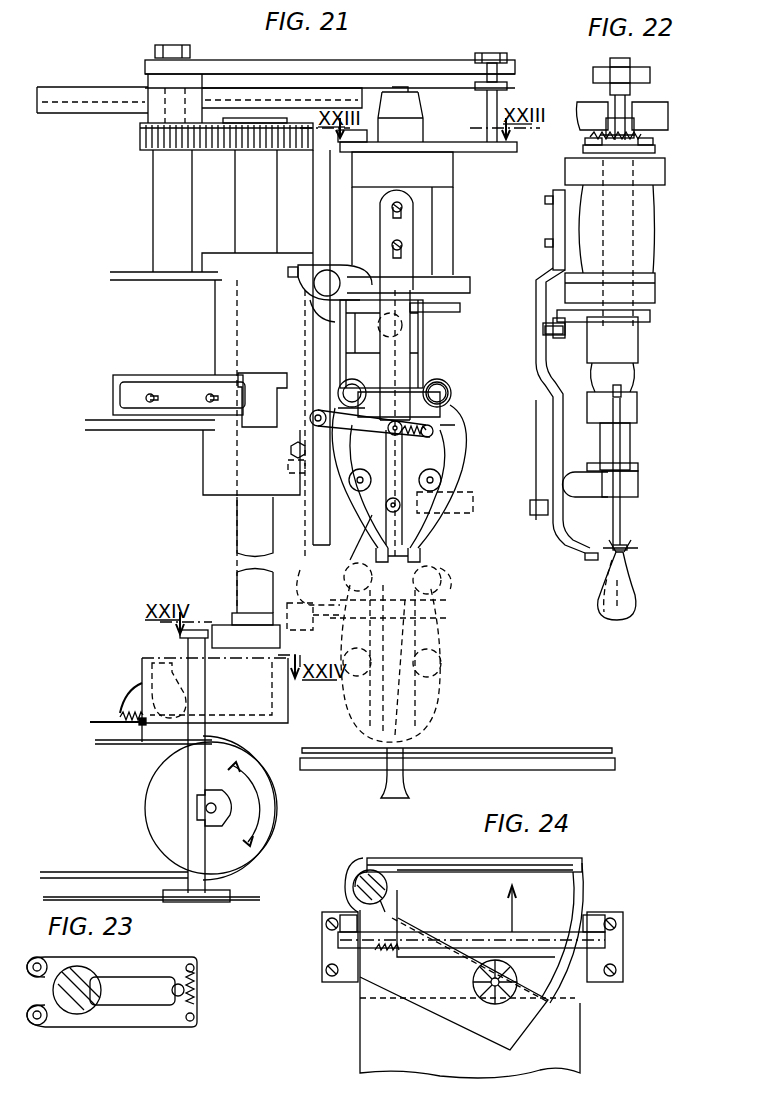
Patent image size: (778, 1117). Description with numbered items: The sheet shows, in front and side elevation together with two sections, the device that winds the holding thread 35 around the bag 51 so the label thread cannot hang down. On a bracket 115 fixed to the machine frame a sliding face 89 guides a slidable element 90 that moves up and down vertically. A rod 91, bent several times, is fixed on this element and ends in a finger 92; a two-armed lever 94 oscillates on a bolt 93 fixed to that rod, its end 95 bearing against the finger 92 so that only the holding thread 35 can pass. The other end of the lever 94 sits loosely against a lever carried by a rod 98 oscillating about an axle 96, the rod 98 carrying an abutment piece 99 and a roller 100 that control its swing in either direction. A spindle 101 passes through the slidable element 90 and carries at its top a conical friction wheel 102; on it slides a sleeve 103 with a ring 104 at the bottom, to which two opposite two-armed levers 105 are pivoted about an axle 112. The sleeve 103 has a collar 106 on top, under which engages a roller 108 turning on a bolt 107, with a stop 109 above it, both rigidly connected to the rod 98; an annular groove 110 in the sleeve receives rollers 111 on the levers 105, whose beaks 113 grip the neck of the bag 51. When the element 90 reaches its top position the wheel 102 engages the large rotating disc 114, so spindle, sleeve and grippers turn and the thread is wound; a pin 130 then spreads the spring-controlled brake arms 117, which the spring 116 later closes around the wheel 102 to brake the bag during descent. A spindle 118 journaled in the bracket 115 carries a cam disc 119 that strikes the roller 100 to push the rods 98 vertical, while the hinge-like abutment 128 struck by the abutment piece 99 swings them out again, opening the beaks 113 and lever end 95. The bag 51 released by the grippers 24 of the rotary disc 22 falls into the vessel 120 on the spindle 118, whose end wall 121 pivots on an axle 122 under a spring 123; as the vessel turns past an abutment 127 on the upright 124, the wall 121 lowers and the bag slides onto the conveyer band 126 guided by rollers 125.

In FIG. 21, the rotary disc 22 is at (606, 748).
In FIG. 21, the grippers 24 is at (460, 758).
In FIG. 21, the holding thread 35 is at (445, 592).
In FIG. 21, the bag 51 is at (138, 684).
In FIG. 22, the bag 51 is at (630, 598).
In FIG. 24, the bag 51 is at (497, 1003).
In FIG. 21, the sliding face 89 is at (318, 208).
In FIG. 21, the slidable element 90 is at (415, 235).
In FIG. 22, the slidable element 90 is at (642, 238).
In FIG. 21, the rod 91 is at (395, 425).
In FIG. 22, the rod 91 is at (543, 263).
In FIG. 21, the finger 92 is at (372, 600).
In FIG. 22, the finger 92 is at (590, 562).
In FIG. 21, the bolt 93 is at (452, 506).
In FIG. 22, the bolt 93 is at (548, 510).
In FIG. 21, the two-armed lever 94 is at (452, 462).
In FIG. 22, the two-armed lever 94 is at (546, 483).
In FIG. 21, the end of two-armed lever 95 is at (422, 548).
In FIG. 21, the axle 96 is at (320, 290).
In FIG. 21, the rod 98 is at (313, 352).
In FIG. 21, the abutment piece 99 is at (288, 272).
In FIG. 21, the roller 100 is at (292, 450).
In FIG. 21, the spindle 101 is at (435, 432).
In FIG. 22, the spindle 101 is at (628, 453).
In FIG. 21, the conical friction wheel 102 is at (405, 110).
In FIG. 22, the conical friction wheel 102 is at (632, 128).
In FIG. 23, the conical friction wheel 102 is at (77, 1002).
In FIG. 21, the sleeve 103 is at (410, 340).
In FIG. 22, the sleeve 103 is at (612, 354).
In FIG. 21, the ring 104 is at (352, 537).
In FIG. 22, the ring 104 is at (577, 475).
In FIG. 21, the two-armed levers 105 is at (452, 417).
In FIG. 22, the two-armed levers 105 is at (621, 520).
In FIG. 21, the collar 106 is at (460, 308).
In FIG. 22, the collar 106 is at (642, 315).
In FIG. 22, the bolt 107 is at (566, 329).
In FIG. 21, the roller 108 is at (382, 322).
In FIG. 22, the roller 108 is at (568, 341).
In FIG. 21, the stop 109 is at (412, 293).
In FIG. 22, the stop 109 is at (610, 288).
In FIG. 21, the annular groove 110 is at (440, 386).
In FIG. 22, the annular groove 110 is at (628, 386).
In FIG. 21, the rollers 111 is at (450, 393).
In FIG. 22, the rollers 111 is at (632, 410).
In FIG. 21, the axle 112 is at (441, 480).
In FIG. 22, the axle 112 is at (624, 488).
In FIG. 22, the beaks 113 is at (628, 548).
In FIG. 21, the rotating disc 114 is at (114, 99).
In FIG. 22, the rotating disc 114 is at (585, 108).
In FIG. 21, the bracket 115 is at (105, 420).
In FIG. 22, the spring 116 is at (600, 134).
In FIG. 23, the spring 116 is at (193, 998).
In FIG. 21, the brake arms 117 is at (458, 147).
In FIG. 23, the brake arms 117 is at (170, 966).
In FIG. 21, the spindle 118 is at (245, 522).
In FIG. 24, the spindle 118 is at (375, 887).
In FIG. 21, the cam disc 119 is at (223, 634).
In FIG. 21, the vessel 120 is at (215, 690).
In FIG. 24, the vessel 120 is at (582, 900).
In FIG. 21, the end wall 121 is at (112, 722).
In FIG. 24, the end wall 121 is at (454, 984).
In FIG. 21, the axle 122 is at (137, 742).
In FIG. 21, the spring 123 is at (128, 700).
In FIG. 24, the spring 123 is at (395, 930).
In FIG. 21, the upright 124 is at (188, 782).
In FIG. 24, the upright 124 is at (536, 945).
In FIG. 21, the rollers 125 is at (155, 836).
In FIG. 24, the rollers 125 is at (412, 861).
In FIG. 21, the conveyer band 126 is at (146, 753).
In FIG. 24, the conveyer band 126 is at (470, 994).
In FIG. 21, the abutment 127 is at (186, 642).
In FIG. 24, the abutment 127 is at (508, 980).
In FIG. 21, the hinge-like abutment 128 is at (268, 378).
In FIG. 21, the pin 130 is at (490, 120).
In FIG. 23, the pin 130 is at (168, 992).